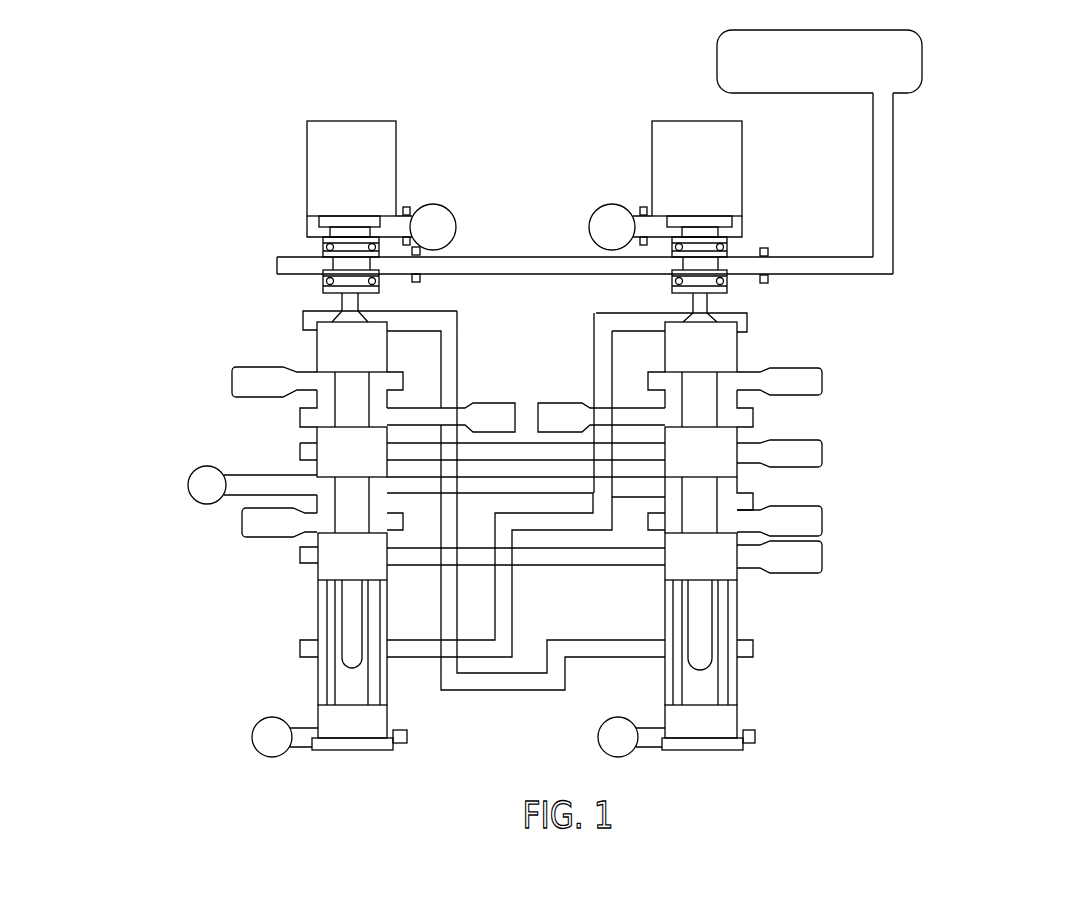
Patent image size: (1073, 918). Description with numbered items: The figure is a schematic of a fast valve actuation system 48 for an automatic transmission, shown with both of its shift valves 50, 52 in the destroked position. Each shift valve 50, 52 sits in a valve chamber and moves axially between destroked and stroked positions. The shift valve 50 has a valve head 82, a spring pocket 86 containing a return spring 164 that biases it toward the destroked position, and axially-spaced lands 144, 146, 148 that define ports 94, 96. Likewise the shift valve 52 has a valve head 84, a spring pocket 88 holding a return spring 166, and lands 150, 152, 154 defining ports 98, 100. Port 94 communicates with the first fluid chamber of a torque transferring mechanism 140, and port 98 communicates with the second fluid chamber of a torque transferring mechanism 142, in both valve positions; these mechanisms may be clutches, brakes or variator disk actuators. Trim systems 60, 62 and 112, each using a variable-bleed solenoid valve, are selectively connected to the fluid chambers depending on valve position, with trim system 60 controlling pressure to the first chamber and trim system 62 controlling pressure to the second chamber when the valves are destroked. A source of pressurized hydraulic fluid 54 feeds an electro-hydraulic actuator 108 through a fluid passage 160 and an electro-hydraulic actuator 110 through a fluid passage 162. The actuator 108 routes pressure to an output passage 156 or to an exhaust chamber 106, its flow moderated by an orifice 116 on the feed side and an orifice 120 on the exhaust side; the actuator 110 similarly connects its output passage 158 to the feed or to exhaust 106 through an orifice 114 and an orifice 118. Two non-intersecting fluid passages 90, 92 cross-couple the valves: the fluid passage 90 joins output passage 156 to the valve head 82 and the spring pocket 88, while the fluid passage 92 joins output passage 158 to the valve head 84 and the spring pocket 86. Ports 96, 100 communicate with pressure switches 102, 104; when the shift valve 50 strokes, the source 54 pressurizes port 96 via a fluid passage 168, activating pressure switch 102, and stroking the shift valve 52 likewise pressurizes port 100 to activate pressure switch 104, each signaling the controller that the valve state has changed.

The fast valve actuation system 48 is at (986, 198).
The shift valve 50 is at (221, 317).
The shift valve 52 is at (906, 392).
The source of pressurized hydraulic fluid 54 is at (917, 63).
The trim system 60 is at (232, 383).
The trim system 62 is at (822, 384).
The valve head 82 is at (371, 314).
The valve head 84 is at (716, 314).
The spring pocket 86 is at (340, 681).
The spring pocket 88 is at (712, 681).
The fluid passage 90 is at (458, 366).
The fluid passage 92 is at (593, 344).
The port 94 is at (346, 391).
The port 96 is at (346, 511).
The port 98 is at (706, 389).
The port 100 is at (706, 516).
The pressure switch 102 is at (240, 523).
The pressure switch 104 is at (822, 523).
The exhaust chamber 106 is at (456, 227).
The electro-hydraulic actuator 108 is at (355, 126).
The electro-hydraulic actuator 110 is at (680, 126).
The trim system 112 is at (822, 453).
The orifice 114 is at (765, 248).
The orifice 116 is at (421, 282).
The orifice 118 is at (641, 207).
The orifice 120 is at (407, 207).
The torque transferring mechanism 140 is at (493, 403).
The torque transferring mechanism 142 is at (560, 403).
The land 144 is at (375, 346).
The land 146 is at (320, 441).
The land 148 is at (318, 576).
The land 150 is at (668, 346).
The land 152 is at (737, 437).
The land 154 is at (730, 576).
The output passage 156 is at (342, 301).
The output passage 158 is at (693, 301).
The fluid passage 160 is at (524, 266).
The fluid passage 162 is at (833, 262).
The return spring 164 is at (327, 621).
The return spring 166 is at (728, 621).
The fluid passage 168 is at (565, 564).